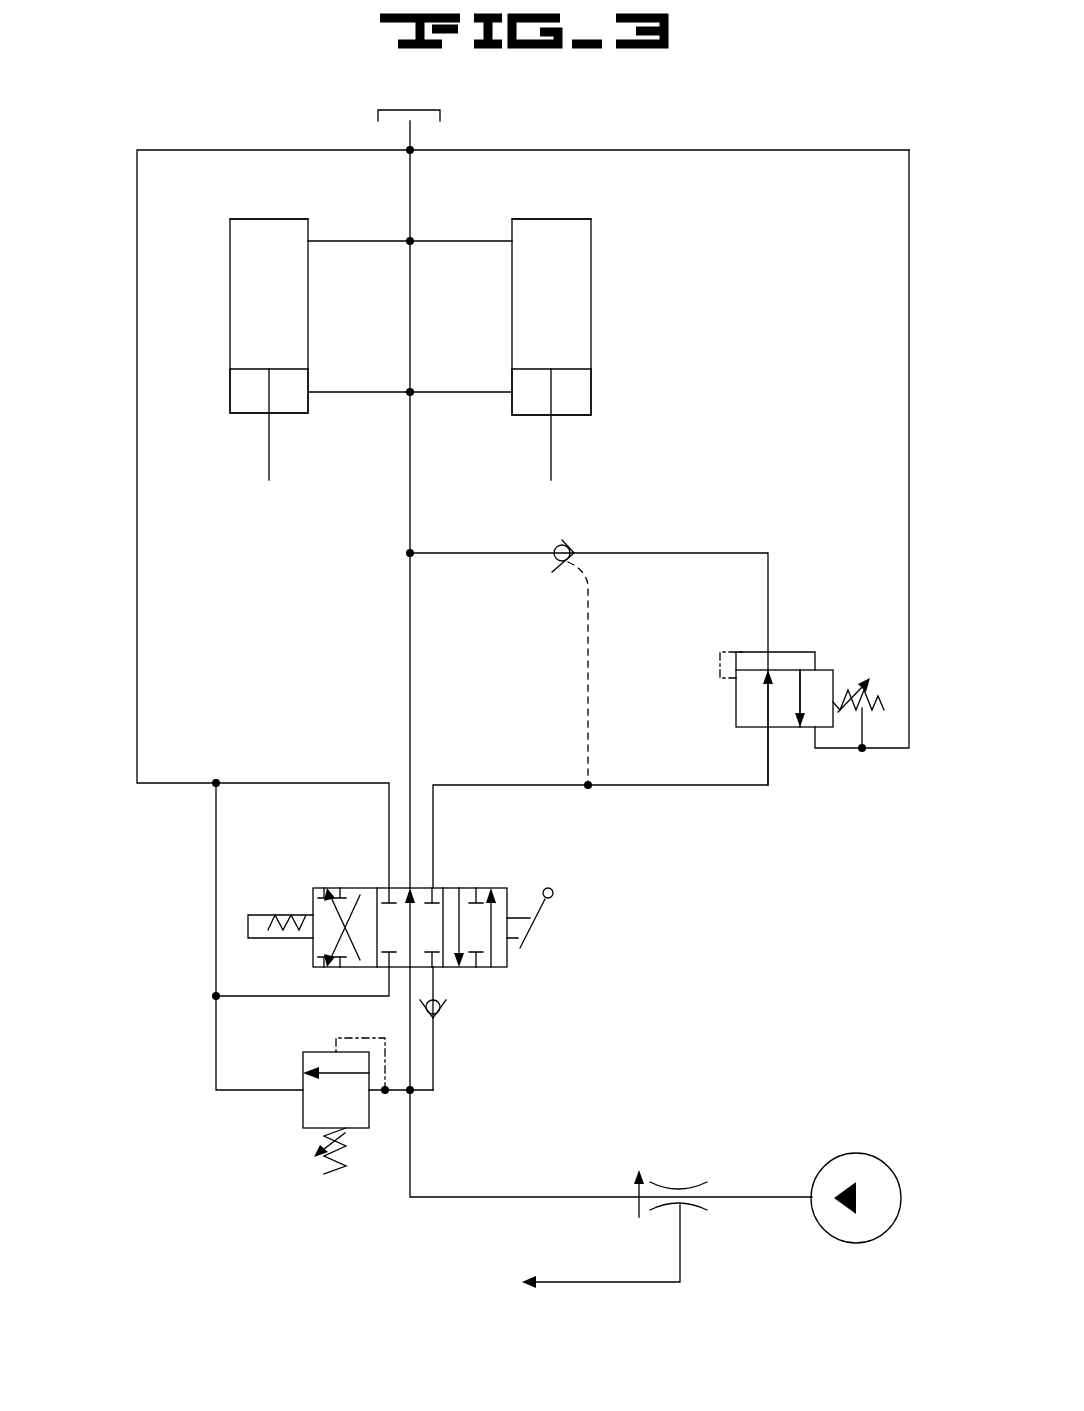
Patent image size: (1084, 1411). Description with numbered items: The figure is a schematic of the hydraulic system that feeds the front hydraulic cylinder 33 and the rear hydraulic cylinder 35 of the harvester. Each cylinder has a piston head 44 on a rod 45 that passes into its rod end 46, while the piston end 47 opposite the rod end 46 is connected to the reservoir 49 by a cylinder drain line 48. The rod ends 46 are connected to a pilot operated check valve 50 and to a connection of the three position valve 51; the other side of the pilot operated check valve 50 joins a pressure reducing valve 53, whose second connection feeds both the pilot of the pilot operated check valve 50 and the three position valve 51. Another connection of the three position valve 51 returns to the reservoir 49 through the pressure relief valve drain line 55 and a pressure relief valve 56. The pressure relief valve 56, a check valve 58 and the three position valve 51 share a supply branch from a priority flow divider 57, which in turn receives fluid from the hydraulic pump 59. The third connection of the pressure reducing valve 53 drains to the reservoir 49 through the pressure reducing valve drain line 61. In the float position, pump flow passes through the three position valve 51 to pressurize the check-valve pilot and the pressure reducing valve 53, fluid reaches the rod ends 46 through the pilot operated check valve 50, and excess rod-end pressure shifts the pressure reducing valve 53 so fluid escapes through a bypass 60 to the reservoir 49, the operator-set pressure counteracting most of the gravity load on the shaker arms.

The front hydraulic cylinder 33 is at (214, 233).
The rear hydraulic cylinder 35 is at (612, 236).
The piston head 44 is at (238, 368).
The rod 45 is at (266, 472).
The rod end 46 is at (238, 418).
The piston end 47 is at (272, 219).
The cylinder drain line 48 is at (410, 208).
The reservoir 49 is at (388, 110).
The pilot operated check valve 50 is at (568, 540).
The three position valve 51 is at (505, 967).
The pressure reducing valve 53 is at (785, 727).
The pressure relief valve drain line 55 is at (137, 622).
The pressure relief valve 56 is at (318, 1052).
The priority flow divider 57 is at (680, 1183).
The check valve 58 is at (446, 1010).
The hydraulic pump 59 is at (858, 1154).
The bypass 60 is at (790, 652).
The pressure reducing valve drain line 61 is at (910, 520).